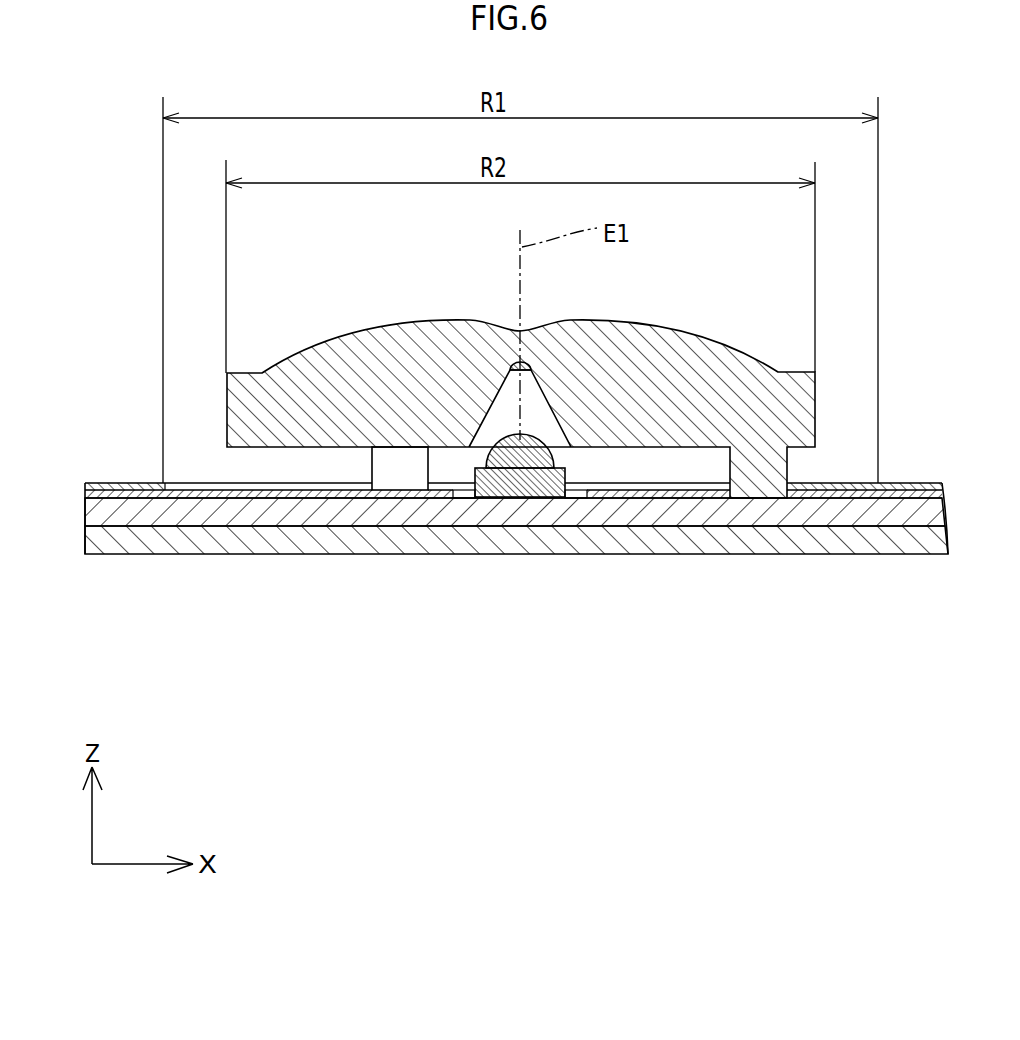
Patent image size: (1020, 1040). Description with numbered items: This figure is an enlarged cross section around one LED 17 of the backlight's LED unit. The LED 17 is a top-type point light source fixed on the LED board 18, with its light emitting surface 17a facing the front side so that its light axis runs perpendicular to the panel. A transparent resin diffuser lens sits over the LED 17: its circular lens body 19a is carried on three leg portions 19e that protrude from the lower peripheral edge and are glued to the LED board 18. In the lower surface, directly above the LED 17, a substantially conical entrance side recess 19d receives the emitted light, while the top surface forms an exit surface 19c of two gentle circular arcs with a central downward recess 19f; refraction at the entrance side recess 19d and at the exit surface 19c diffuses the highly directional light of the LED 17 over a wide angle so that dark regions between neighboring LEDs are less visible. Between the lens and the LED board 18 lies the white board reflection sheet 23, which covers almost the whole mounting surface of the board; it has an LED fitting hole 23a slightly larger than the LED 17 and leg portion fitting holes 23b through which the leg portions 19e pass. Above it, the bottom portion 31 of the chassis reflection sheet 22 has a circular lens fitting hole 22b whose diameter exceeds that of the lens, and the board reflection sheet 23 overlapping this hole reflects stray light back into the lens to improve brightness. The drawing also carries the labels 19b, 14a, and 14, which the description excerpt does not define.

The lens body 19a is at (242, 392).
The bottom surface of diffuser lens 19b is at (618, 449).
The exit surface 19c is at (352, 336).
The entrance side recess 19d is at (490, 414).
The leg portions 19e is at (388, 472).
The recess 19f is at (470, 318).
The bottom portion 31 is at (128, 482).
The chassis reflection sheet 22 is at (510, 432).
The lens fitting hole 22b is at (165, 484).
The board reflection sheet 23 is at (210, 497).
The LED fitting hole 23a is at (587, 493).
The leg portion fitting holes 23b is at (773, 497).
The LED board 18 is at (228, 527).
The LED 17 is at (506, 447).
The light emitting surface 17a is at (487, 453).
The bottom plate of chassis 14a is at (516, 588).
The chassis 14 is at (130, 537).